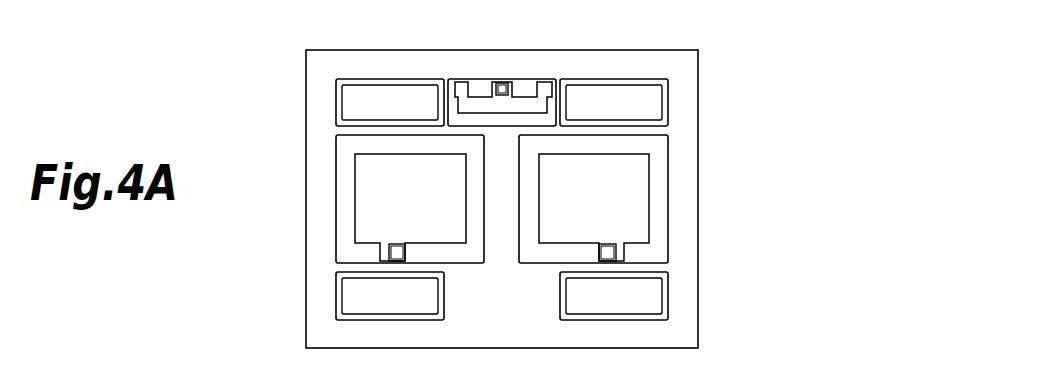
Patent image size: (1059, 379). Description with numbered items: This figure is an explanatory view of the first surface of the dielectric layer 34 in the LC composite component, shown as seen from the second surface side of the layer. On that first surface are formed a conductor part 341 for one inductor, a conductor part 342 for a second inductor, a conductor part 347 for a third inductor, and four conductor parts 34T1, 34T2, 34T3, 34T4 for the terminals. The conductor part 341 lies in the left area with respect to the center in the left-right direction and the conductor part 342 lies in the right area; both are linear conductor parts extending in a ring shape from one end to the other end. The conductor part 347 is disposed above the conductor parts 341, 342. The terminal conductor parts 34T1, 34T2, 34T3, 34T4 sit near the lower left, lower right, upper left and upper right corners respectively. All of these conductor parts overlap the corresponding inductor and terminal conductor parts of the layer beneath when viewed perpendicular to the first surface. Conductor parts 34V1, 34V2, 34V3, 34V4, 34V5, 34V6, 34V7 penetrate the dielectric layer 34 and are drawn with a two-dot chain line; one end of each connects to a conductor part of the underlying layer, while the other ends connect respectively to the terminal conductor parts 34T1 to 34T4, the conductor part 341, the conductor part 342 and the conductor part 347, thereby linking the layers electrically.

The dielectric layer 34 is at (699, 54).
The conductor part for the inductor 11 341 is at (336, 197).
The conductor part for the inductor 12 342 is at (668, 195).
The conductor part for the inductor 17 347 is at (456, 78).
The conductor part for the terminal 34T1 is at (336, 291).
The conductor part for the terminal 34T2 is at (669, 290).
The conductor part for the terminal 34T3 is at (336, 96).
The conductor part for the terminal 34T4 is at (670, 95).
The conductor part penetrating the dielectric layer 34V1 is at (342, 310).
The conductor part penetrating the dielectric layer 34V2 is at (662, 307).
The conductor part penetrating the dielectric layer 34V3 is at (342, 115).
The conductor part penetrating the dielectric layer 34V4 is at (662, 113).
The conductor part penetrating the dielectric layer 34V5 is at (388, 254).
The conductor part penetrating the dielectric layer 34V6 is at (617, 253).
The conductor part penetrating the dielectric layer 34V7 is at (502, 81).